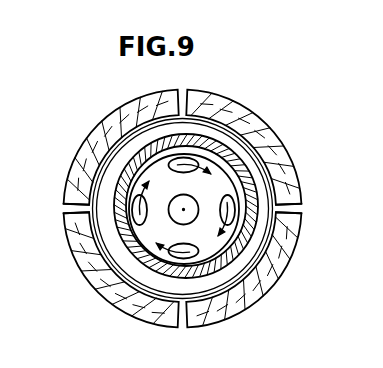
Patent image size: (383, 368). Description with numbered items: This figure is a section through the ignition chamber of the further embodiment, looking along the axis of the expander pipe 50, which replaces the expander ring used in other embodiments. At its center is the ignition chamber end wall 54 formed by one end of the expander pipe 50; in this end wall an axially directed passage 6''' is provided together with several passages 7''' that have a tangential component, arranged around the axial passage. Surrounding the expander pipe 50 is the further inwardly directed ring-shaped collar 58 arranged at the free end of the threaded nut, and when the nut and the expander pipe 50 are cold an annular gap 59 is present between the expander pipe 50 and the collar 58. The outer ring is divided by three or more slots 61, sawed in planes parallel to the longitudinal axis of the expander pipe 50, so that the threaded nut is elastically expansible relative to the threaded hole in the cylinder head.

The ring-shaped collar 58 is at (138, 123).
The annular gap 59 is at (68, 231).
The slots 61 is at (64, 209).
The expander pipe 50 is at (110, 167).
The ignition chamber end wall 54 is at (230, 168).
The axially directed passage 6''' is at (236, 218).
The passages with tangential component 7''' is at (234, 208).